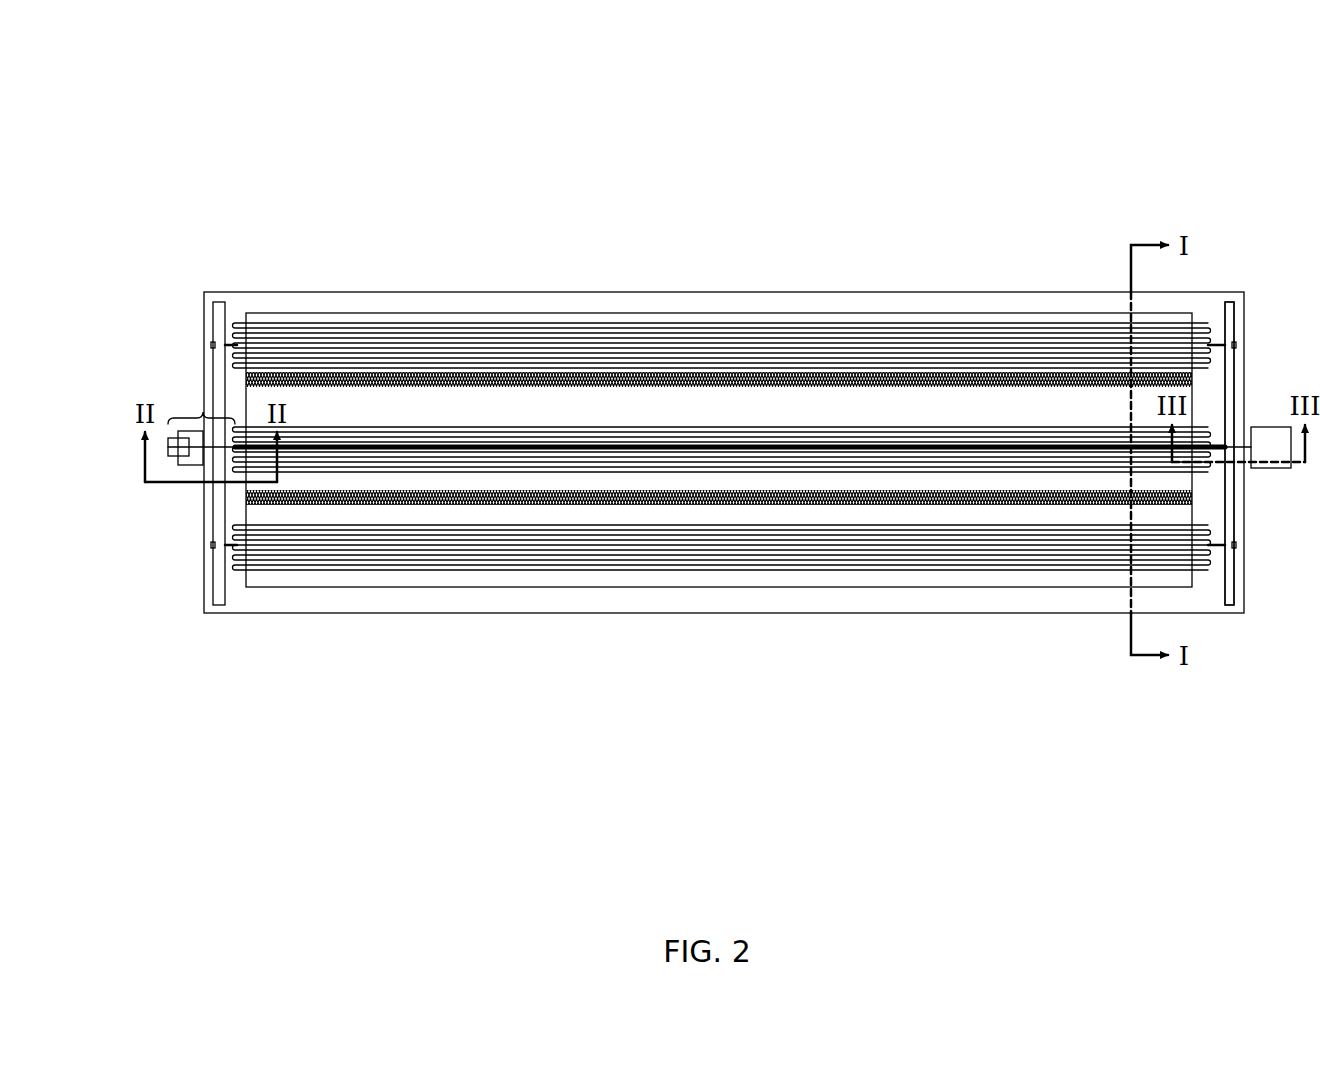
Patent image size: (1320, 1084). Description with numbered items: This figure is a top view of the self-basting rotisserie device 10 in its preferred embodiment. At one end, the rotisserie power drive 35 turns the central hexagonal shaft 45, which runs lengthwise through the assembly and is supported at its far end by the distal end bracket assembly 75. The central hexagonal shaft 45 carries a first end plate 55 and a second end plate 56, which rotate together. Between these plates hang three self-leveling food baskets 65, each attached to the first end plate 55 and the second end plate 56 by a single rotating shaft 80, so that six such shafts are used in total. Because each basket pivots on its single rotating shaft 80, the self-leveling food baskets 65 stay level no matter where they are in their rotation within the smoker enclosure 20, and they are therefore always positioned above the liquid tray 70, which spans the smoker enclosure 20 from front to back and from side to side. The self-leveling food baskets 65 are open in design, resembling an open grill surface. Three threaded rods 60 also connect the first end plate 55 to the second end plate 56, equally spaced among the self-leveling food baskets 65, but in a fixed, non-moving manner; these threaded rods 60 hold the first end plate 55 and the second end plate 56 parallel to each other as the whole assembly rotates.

The device 10 is at (198, 210).
The smoker enclosure 20 is at (318, 270).
The rotisserie power drive 35 is at (1266, 439).
The central hexagonal shaft 45 is at (981, 450).
The first end plate 55 is at (217, 608).
The second end plate 56 is at (1230, 300).
The threaded rod 60 is at (793, 383).
The self-leveling food basket 65 is at (498, 340).
The liquid tray 70 is at (401, 313).
The distal end bracket assembly 75 is at (201, 409).
The single rotating shaft 80 is at (1226, 345).